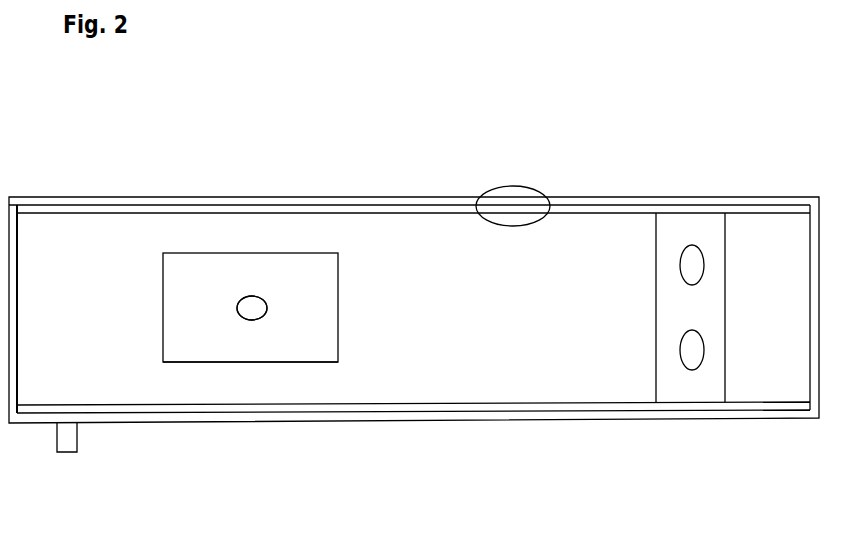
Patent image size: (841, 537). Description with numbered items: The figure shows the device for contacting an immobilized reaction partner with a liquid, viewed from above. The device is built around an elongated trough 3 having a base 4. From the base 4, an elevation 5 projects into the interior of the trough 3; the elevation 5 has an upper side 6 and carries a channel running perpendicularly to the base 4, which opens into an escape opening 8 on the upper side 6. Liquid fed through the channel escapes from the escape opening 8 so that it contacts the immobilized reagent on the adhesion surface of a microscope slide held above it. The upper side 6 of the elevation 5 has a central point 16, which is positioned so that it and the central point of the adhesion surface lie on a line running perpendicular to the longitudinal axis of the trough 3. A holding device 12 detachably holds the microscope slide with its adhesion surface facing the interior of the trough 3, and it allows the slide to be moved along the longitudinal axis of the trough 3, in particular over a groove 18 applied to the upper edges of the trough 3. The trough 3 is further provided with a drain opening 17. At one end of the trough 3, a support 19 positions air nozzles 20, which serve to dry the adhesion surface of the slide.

The trough 3 is at (255, 430).
The base 4 is at (531, 339).
The elevation 5 is at (283, 362).
The upper side 6 is at (298, 279).
The escape opening 8 is at (253, 308).
The holding device 12 is at (520, 184).
The central point 16 is at (249, 306).
The drain opening 17 is at (70, 447).
The groove 18 is at (316, 413).
The support 19 is at (703, 388).
The air nozzle 20 is at (681, 272).